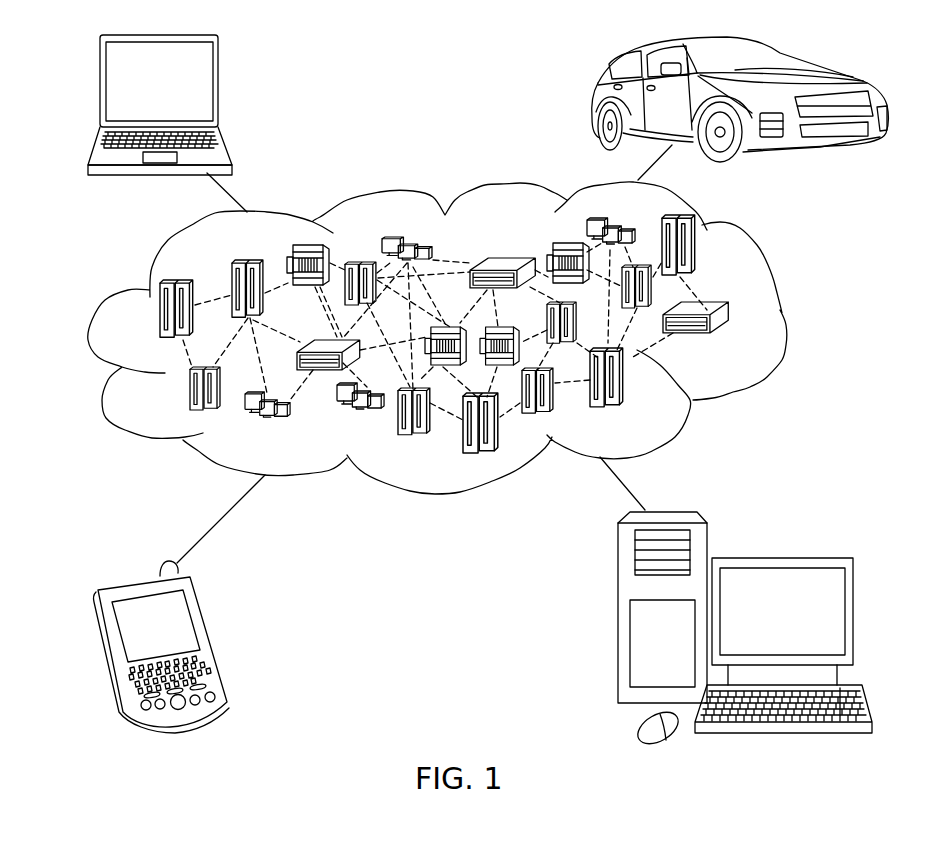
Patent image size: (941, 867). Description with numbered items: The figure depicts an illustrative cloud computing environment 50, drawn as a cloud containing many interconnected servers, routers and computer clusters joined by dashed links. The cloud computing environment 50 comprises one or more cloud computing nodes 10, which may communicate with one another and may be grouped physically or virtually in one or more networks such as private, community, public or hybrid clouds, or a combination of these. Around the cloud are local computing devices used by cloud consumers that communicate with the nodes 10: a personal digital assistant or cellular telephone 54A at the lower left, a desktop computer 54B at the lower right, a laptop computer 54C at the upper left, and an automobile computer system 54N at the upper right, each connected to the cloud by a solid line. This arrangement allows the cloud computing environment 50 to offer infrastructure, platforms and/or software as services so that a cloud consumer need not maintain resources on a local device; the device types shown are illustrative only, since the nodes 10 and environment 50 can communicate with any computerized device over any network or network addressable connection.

The cloud computing node 10 is at (459, 354).
The cloud computing environment 50 is at (782, 313).
The personal digital assistant or cellular telephone 54A is at (212, 638).
The desktop computer 54B is at (778, 557).
The laptop computer 54C is at (220, 86).
The automobile computer system 54N is at (591, 100).